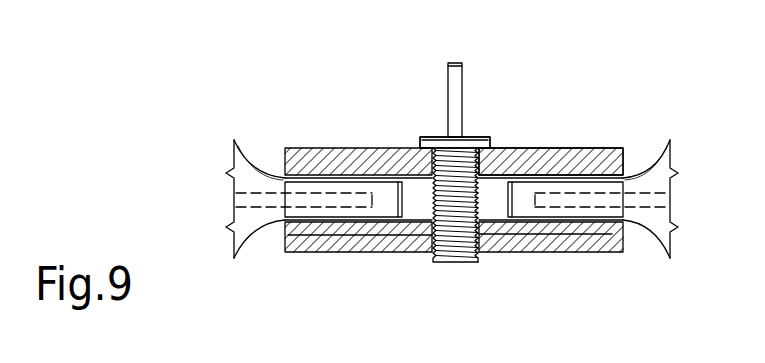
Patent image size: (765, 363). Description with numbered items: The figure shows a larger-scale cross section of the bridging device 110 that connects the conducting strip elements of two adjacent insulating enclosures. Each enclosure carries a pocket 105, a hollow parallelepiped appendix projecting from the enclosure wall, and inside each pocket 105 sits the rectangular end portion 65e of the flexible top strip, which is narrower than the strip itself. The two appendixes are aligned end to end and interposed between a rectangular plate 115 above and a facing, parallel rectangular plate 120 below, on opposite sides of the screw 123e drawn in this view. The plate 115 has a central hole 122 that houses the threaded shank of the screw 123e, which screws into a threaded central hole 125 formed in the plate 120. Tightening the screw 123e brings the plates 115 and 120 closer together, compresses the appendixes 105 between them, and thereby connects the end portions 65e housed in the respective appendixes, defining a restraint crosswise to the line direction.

The bridging device 110 is at (477, 64).
The central hole 122 is at (495, 147).
The rectangular plate 115 is at (542, 130).
The pocket 105 is at (310, 171).
The rectangular plate 120 is at (552, 258).
The end portion 65e is at (305, 212).
The threaded bolt 123e is at (463, 234).
The threaded central hole 125 is at (453, 198).